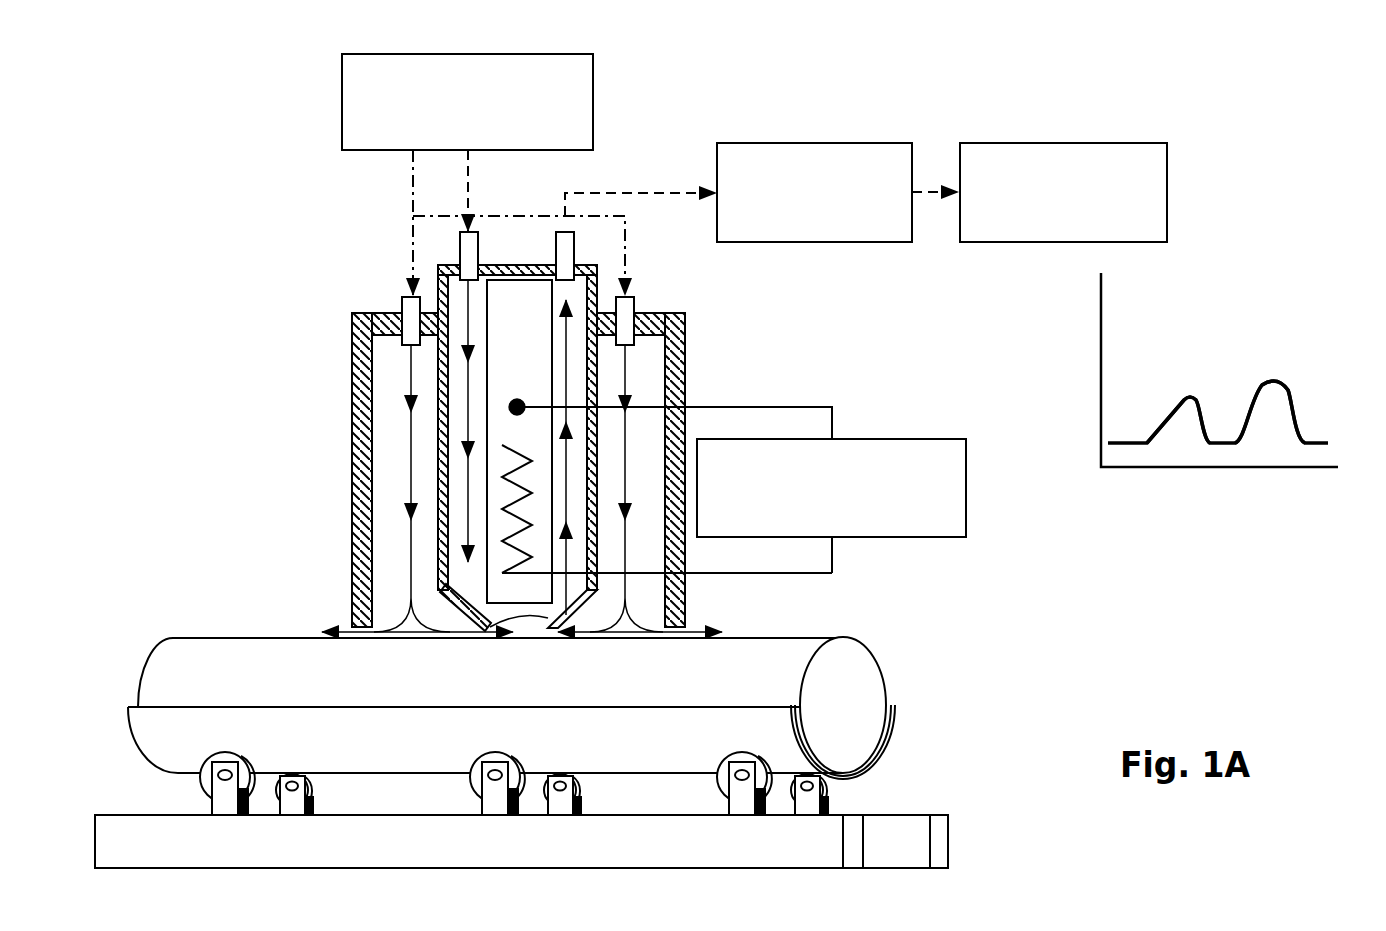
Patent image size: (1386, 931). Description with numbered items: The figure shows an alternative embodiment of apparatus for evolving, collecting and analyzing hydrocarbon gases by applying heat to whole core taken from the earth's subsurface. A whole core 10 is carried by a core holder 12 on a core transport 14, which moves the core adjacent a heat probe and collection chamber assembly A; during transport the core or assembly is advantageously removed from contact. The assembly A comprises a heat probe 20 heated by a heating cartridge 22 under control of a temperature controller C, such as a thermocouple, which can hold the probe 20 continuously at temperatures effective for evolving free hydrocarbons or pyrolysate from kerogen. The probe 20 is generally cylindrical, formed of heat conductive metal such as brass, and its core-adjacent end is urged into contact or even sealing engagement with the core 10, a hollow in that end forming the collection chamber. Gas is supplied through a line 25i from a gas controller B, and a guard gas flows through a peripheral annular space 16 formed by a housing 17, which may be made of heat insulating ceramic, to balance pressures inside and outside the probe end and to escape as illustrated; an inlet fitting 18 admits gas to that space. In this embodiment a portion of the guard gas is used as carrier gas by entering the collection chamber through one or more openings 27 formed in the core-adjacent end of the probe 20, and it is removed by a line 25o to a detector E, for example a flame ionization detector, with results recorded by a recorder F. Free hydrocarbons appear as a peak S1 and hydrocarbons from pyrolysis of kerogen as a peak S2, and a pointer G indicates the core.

The heat probe and collection chamber assembly A is at (538, 457).
The gas controller B is at (322, 95).
The temperature controller C is at (890, 439).
The detector E is at (797, 143).
The recorder F is at (1033, 143).
The core sample G is at (575, 696).
The whole core 10 is at (605, 681).
The core holder 12 is at (614, 753).
The core transport 14 is at (727, 858).
The peripheral annular space 16 is at (409, 469).
The housing 17 is at (683, 372).
The gas inlet fitting 18 is at (411, 265).
The heat probe 20 is at (597, 438).
The heating cartridge 22 is at (533, 362).
The carrier gas line 25i is at (463, 203).
The outlet line 25o is at (563, 207).
The openings 27 is at (555, 633).
The peak S1 is at (1183, 397).
The peak S2 is at (1270, 380).